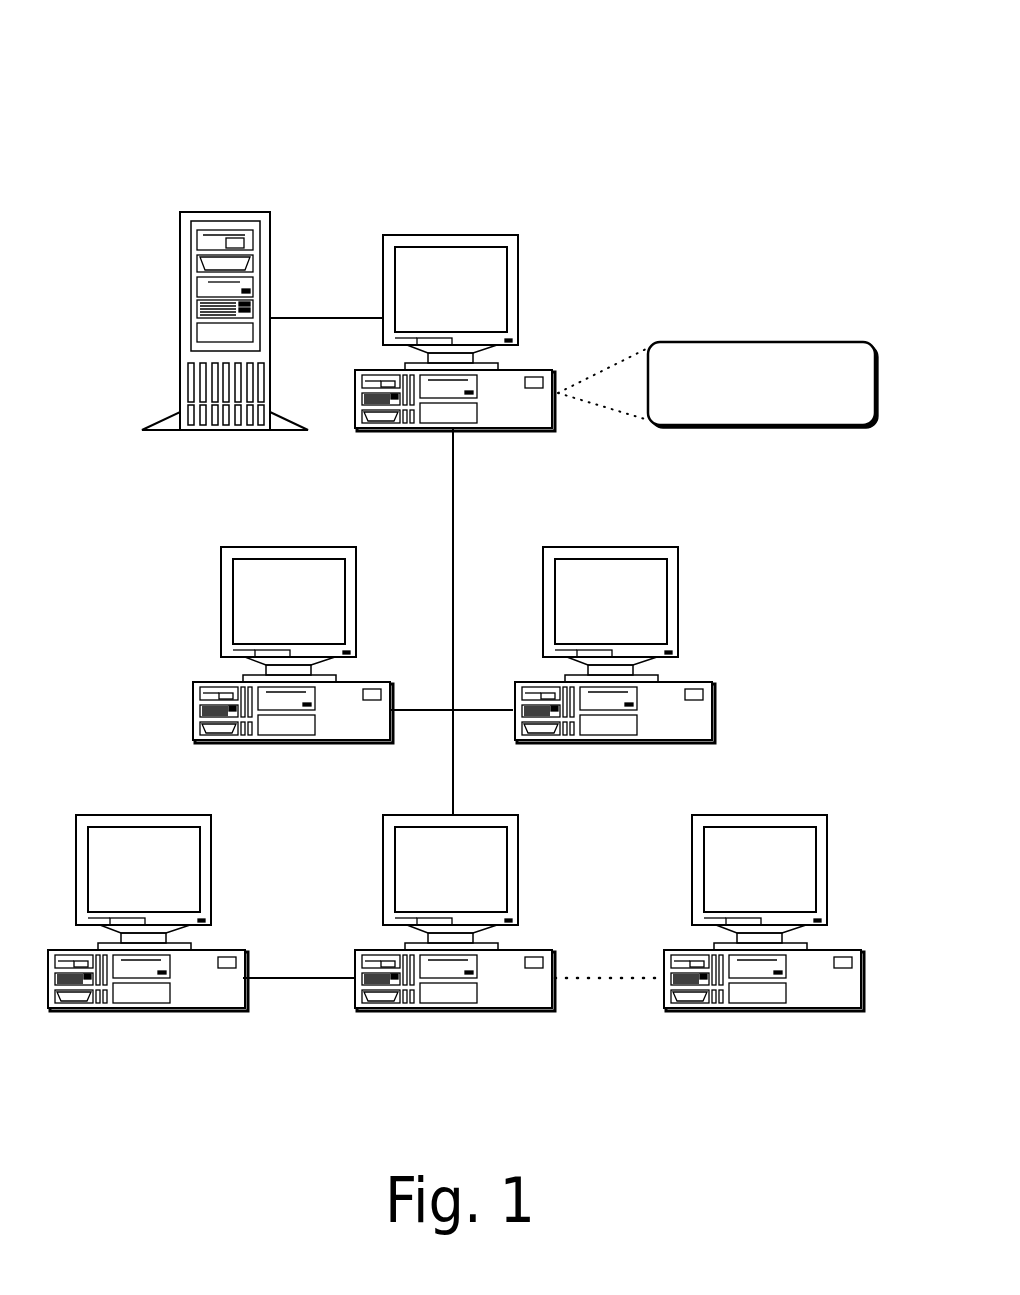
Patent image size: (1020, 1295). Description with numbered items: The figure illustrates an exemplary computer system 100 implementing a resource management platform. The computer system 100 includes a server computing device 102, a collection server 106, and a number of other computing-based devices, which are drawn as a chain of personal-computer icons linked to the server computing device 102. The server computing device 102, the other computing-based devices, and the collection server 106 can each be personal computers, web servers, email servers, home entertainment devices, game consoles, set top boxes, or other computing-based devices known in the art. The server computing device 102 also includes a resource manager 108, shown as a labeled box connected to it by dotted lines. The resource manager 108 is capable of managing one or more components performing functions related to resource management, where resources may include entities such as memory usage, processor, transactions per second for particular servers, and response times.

The computer system 100 is at (538, 70).
The server computing device 102 is at (453, 235).
The collection server 106 is at (225, 212).
The resource manager 108 is at (763, 385).